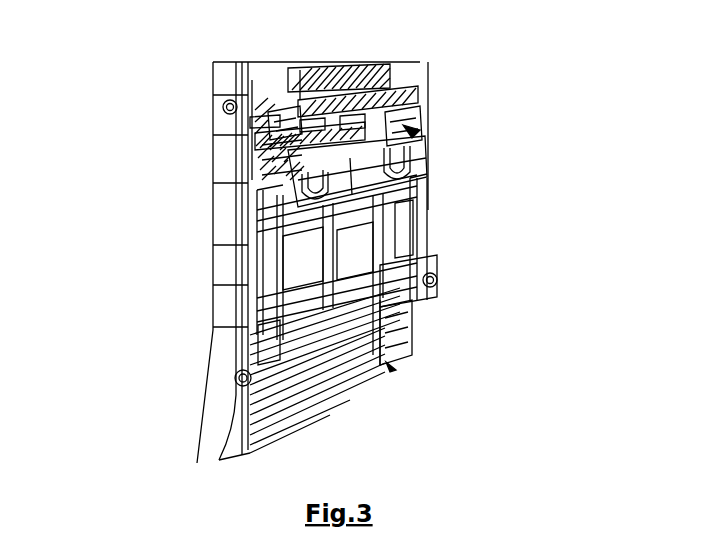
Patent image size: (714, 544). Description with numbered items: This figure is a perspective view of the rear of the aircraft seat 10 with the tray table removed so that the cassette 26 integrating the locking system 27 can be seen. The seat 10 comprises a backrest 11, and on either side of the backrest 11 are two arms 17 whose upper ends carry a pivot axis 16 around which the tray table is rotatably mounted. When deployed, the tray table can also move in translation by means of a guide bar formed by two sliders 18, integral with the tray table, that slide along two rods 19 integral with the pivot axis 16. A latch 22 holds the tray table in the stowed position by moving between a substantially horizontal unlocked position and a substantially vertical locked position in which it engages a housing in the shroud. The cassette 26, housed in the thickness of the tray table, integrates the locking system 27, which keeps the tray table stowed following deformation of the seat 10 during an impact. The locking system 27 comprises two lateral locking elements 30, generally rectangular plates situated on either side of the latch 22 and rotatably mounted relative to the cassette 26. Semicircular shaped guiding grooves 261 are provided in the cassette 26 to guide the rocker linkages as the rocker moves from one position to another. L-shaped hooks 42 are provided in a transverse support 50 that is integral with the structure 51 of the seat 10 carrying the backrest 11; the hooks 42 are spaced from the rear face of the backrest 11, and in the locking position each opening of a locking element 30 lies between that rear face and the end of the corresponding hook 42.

The aircraft seat 10 is at (125, 66).
The backrest 11 is at (228, 158).
The pivot axis 16 is at (410, 302).
The arms 17 is at (410, 351).
The sliders 18 is at (418, 268).
The rods 19 is at (418, 219).
The latch 22 is at (418, 173).
The cassette 26 is at (243, 200).
The guiding grooves 261 is at (303, 213).
The locking system 27 is at (415, 130).
The lateral locking elements 30 is at (285, 136).
The hooks 42 is at (318, 136).
The transverse support 50 is at (337, 120).
The structure 51 is at (392, 366).